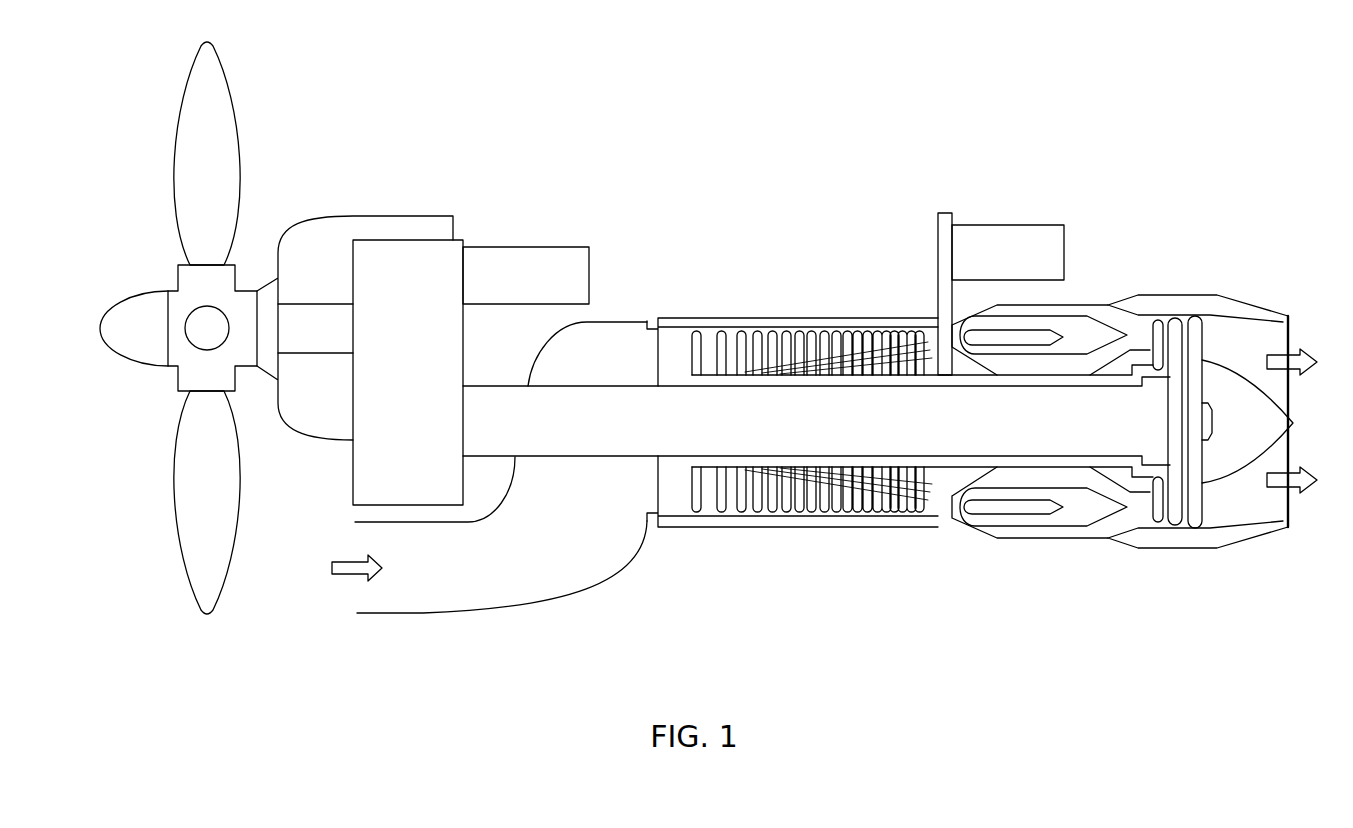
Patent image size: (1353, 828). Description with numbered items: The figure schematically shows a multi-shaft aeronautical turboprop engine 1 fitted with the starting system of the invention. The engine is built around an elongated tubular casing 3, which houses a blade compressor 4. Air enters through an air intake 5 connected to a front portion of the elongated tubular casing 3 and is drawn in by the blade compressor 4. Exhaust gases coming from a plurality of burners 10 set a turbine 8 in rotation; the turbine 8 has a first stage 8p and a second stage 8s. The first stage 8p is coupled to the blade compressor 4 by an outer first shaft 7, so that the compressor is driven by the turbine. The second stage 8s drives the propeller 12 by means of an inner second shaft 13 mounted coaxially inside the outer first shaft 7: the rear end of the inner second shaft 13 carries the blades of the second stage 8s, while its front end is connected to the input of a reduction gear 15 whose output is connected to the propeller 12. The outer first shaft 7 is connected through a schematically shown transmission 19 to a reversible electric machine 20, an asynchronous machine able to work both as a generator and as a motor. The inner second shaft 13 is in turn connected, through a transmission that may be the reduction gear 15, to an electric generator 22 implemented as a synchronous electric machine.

The multi-shaft aeronautical turboprop engine 1 is at (576, 124).
The elongated tubular casing 3 is at (654, 307).
The blade compressor 4 is at (707, 347).
The air intake 5 is at (415, 618).
The outer first shaft 7 is at (948, 476).
The turbine 8 is at (1194, 554).
The second stage of the turbine 8s is at (1231, 334).
The first stage of the turbine 8p is at (1148, 538).
The burners 10 is at (1078, 331).
The propeller 12 is at (184, 140).
The inner second shaft 13 is at (503, 382).
The reduction gear 15 is at (421, 379).
The transmission 19 is at (941, 213).
The reversible electric machine 20 is at (1022, 238).
The electric generator 22 is at (528, 258).